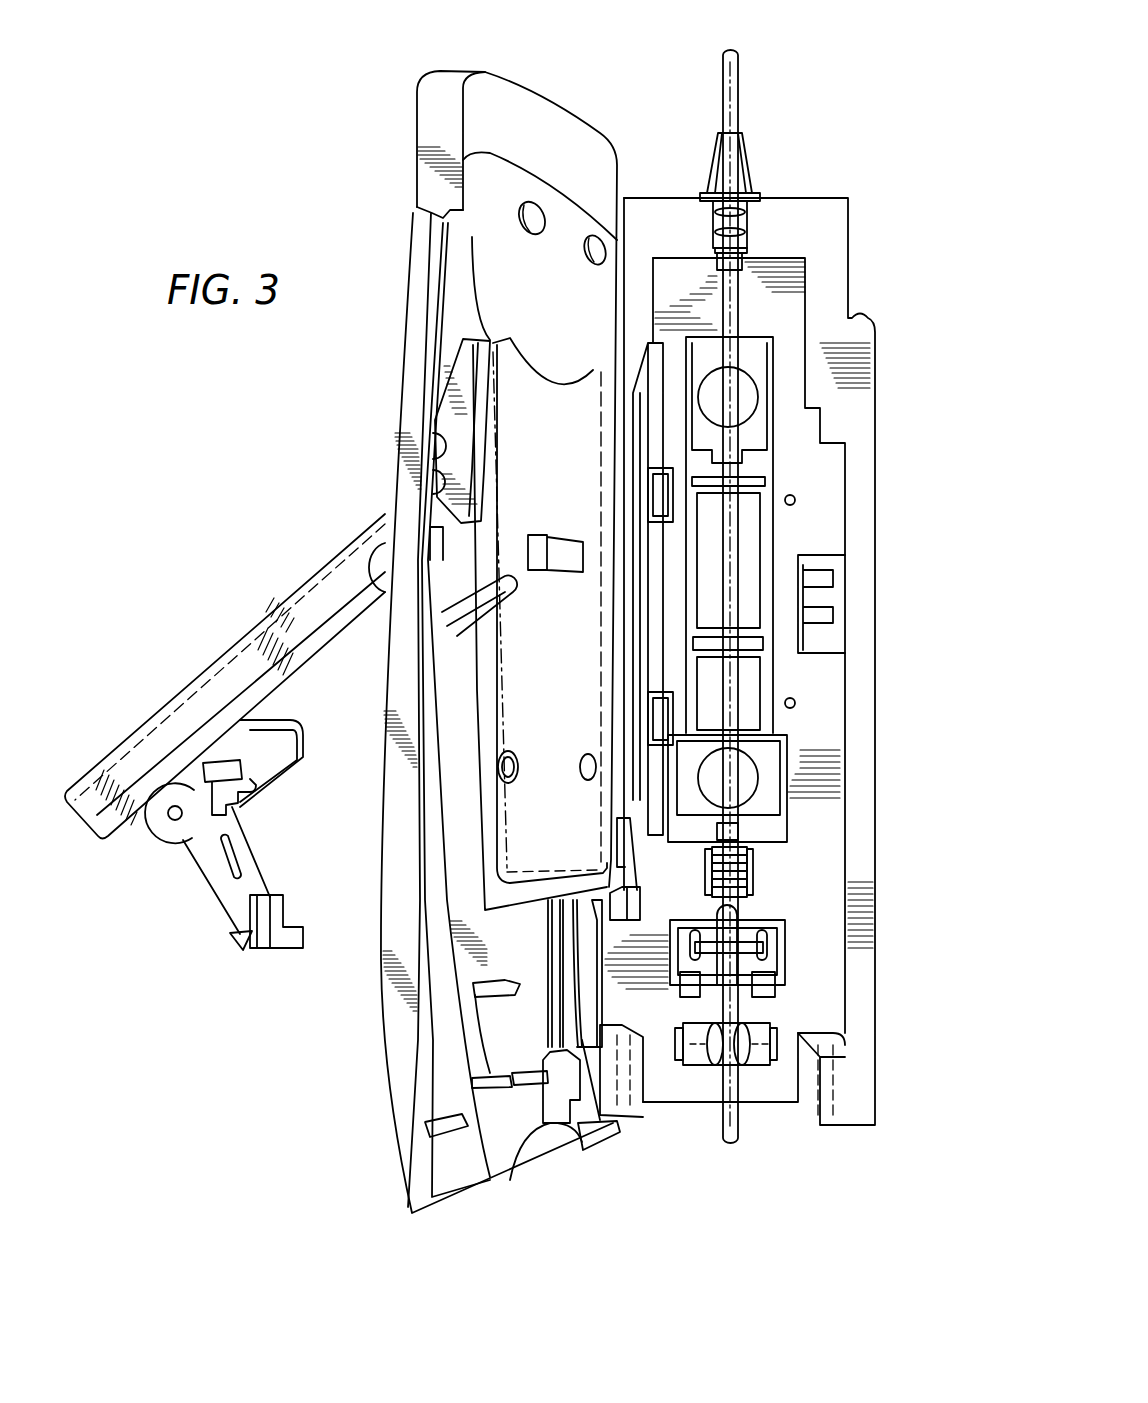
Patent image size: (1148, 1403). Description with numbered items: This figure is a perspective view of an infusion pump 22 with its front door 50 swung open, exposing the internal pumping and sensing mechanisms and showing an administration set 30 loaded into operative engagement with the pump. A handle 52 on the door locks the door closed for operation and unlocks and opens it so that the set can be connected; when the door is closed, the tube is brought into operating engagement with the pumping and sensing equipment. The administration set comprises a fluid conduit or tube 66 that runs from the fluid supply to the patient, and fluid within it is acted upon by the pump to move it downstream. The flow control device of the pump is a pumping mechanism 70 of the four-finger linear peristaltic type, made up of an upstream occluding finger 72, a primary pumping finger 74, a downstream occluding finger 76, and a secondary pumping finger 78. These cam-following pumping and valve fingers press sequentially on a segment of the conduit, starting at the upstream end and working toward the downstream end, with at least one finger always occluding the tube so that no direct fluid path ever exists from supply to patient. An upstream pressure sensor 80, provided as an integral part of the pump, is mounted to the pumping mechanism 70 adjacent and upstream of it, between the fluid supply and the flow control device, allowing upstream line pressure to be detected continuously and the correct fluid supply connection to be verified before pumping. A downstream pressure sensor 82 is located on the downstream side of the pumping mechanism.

The infusion pump 22 is at (810, 198).
The administration set 30 is at (740, 58).
The front door 50 is at (438, 103).
The handle 52 is at (204, 663).
The fluid conduit or tube 66 is at (735, 287).
The pumping mechanism 70 is at (793, 427).
The upstream occluding finger 72 is at (765, 481).
The primary pumping finger 74 is at (753, 540).
The downstream occluding finger 76 is at (763, 643).
The secondary pumping finger 78 is at (752, 682).
The upstream pressure sensor 80 is at (757, 392).
The downstream pressure sensor 82 is at (757, 782).